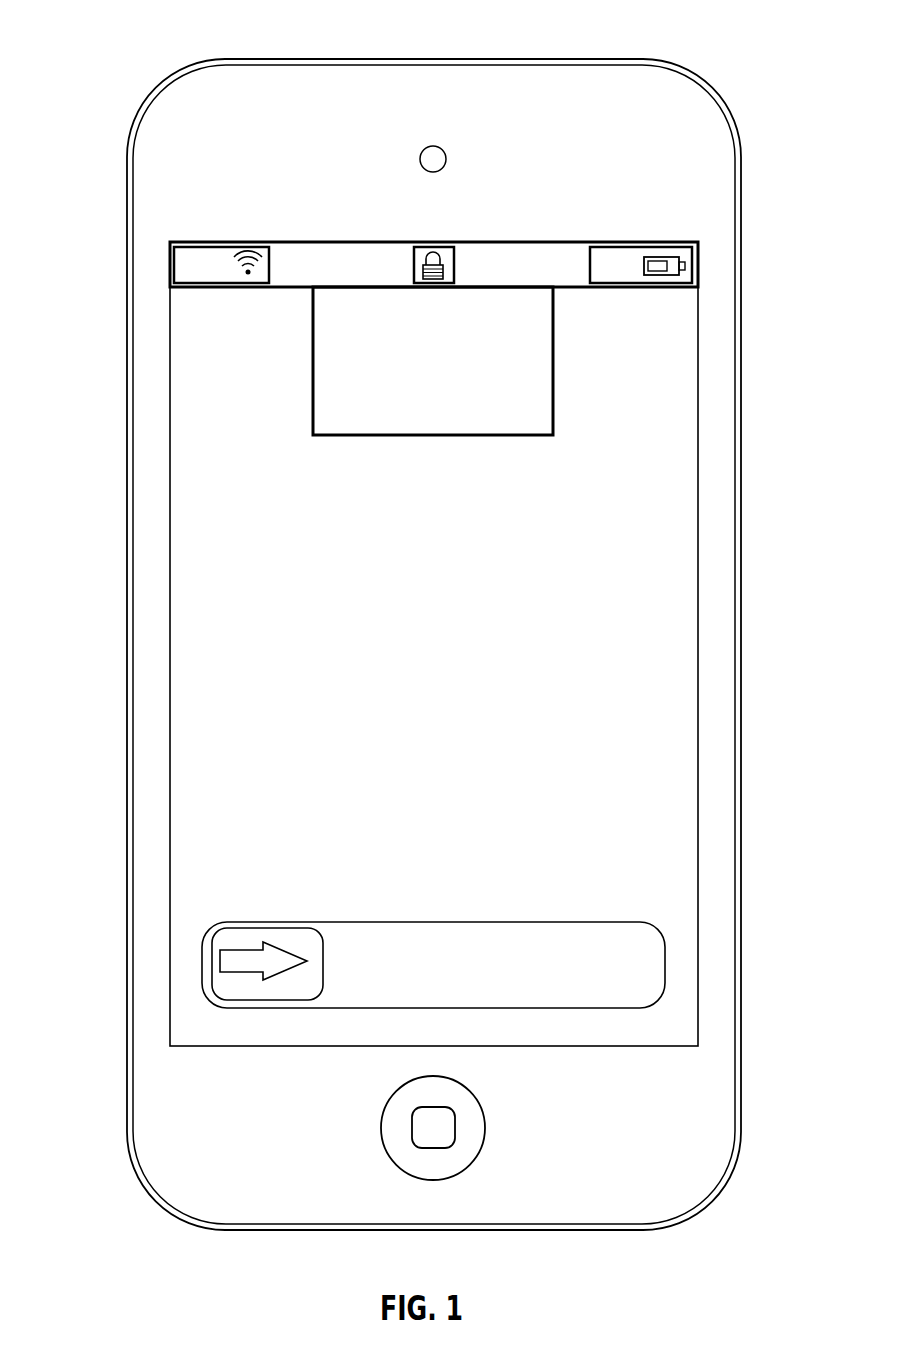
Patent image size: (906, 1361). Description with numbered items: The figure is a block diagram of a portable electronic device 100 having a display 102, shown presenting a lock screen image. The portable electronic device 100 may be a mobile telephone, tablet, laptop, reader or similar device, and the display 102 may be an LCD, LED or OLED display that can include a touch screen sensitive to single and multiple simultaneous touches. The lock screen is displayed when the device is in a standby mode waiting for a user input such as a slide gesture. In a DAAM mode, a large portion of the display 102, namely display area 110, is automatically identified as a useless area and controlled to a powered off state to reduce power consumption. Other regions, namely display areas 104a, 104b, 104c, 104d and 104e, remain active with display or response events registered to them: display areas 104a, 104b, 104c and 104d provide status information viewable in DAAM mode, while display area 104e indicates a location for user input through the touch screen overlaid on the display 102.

The portable electronic device 100 is at (124, 34).
The display 102 is at (205, 605).
The display area 104a is at (218, 243).
The display area 104b is at (433, 247).
The display area 104c is at (640, 247).
The display area 104d is at (553, 355).
The display area 104e is at (268, 988).
The display area 110 is at (704, 641).